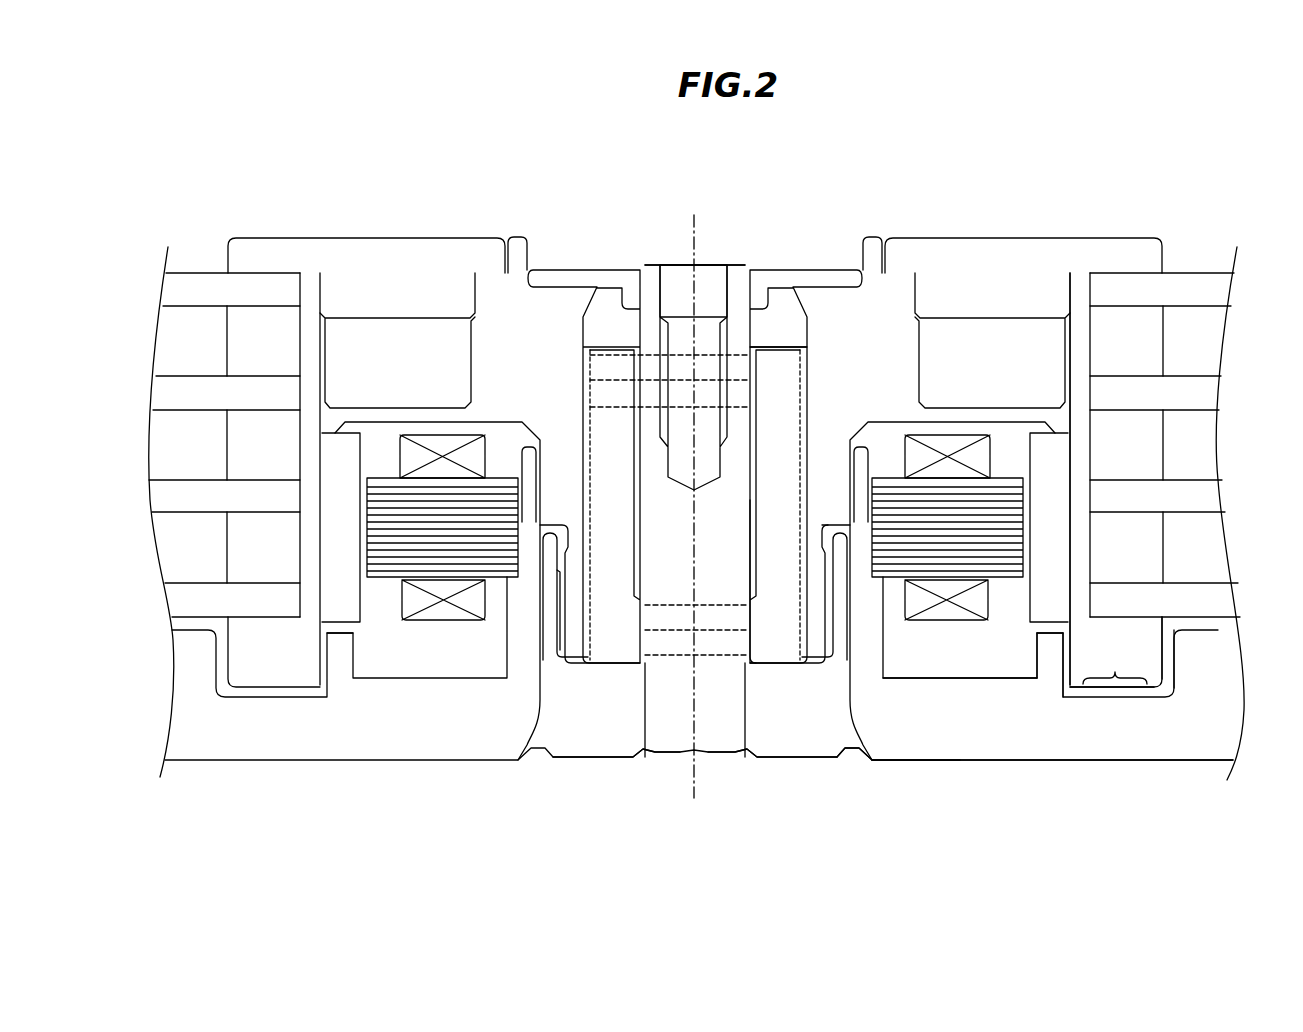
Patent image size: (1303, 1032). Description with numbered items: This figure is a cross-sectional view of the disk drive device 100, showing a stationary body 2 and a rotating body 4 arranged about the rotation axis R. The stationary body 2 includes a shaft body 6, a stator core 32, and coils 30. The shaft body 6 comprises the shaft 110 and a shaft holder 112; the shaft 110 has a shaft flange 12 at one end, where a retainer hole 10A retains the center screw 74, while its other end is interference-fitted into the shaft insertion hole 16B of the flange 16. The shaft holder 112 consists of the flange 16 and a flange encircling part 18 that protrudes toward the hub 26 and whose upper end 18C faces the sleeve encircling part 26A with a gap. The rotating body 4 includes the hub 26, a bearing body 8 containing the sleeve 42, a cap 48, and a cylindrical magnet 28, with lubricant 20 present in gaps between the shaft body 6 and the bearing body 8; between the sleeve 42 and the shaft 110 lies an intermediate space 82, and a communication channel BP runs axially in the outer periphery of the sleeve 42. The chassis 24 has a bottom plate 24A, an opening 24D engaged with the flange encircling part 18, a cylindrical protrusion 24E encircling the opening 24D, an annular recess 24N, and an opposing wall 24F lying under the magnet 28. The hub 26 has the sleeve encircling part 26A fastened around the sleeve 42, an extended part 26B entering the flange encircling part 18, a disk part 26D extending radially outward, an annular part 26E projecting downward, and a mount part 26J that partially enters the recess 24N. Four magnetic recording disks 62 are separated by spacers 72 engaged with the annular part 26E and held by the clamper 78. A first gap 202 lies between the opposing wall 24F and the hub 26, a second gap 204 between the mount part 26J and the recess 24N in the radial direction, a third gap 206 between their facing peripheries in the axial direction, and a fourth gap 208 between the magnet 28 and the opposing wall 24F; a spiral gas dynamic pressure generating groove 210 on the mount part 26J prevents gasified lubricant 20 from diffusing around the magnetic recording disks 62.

The stationary body 2 is at (965, 832).
The rotating body 4 is at (470, 185).
The shaft body 6 is at (652, 161).
The bearing body 8 is at (802, 237).
The retainer hole 10A is at (712, 287).
The shaft flange 12 is at (757, 215).
The flange 16 is at (622, 735).
The shaft insertion hole 16B is at (646, 688).
The flange encircling part 18 is at (843, 630).
The upper end 18C is at (578, 625).
The lubricant 20 is at (748, 533).
The chassis 24 is at (1224, 840).
The bottom plate 24A is at (997, 763).
The opening 24D is at (547, 540).
The protrusion 24E is at (522, 528).
The opposing wall 24F is at (1057, 648).
The recess 24N is at (290, 698).
The hub 26 is at (928, 210).
The sleeve encircling part 26A is at (567, 448).
The extended part 26B is at (580, 640).
The disk part 26D is at (1078, 333).
The annular part 26E is at (1077, 480).
The mount part 26J is at (1258, 597).
The magnet 28 is at (1258, 540).
The coils 30 is at (432, 434).
The stator core 32 is at (390, 580).
The sleeve 42 is at (785, 437).
The cap 48 is at (546, 268).
The magnetic recording disks 62 is at (190, 214).
The spacers 72 is at (200, 551).
The center screw 74 is at (674, 292).
The clamper 78 is at (262, 265).
The intermediate space 82 is at (632, 472).
The disk drive device 100 is at (928, 878).
The shaft 110 is at (723, 733).
The shaft holder 112 is at (790, 897).
The first gap 202 is at (1065, 660).
The second gap 204 is at (1128, 692).
The third gap 206 is at (1167, 663).
The fourth gap 208 is at (1043, 625).
The gas dynamic pressure generating groove 210 is at (1115, 659).
The communication channel BP is at (818, 528).
The rotation axis R is at (695, 491).